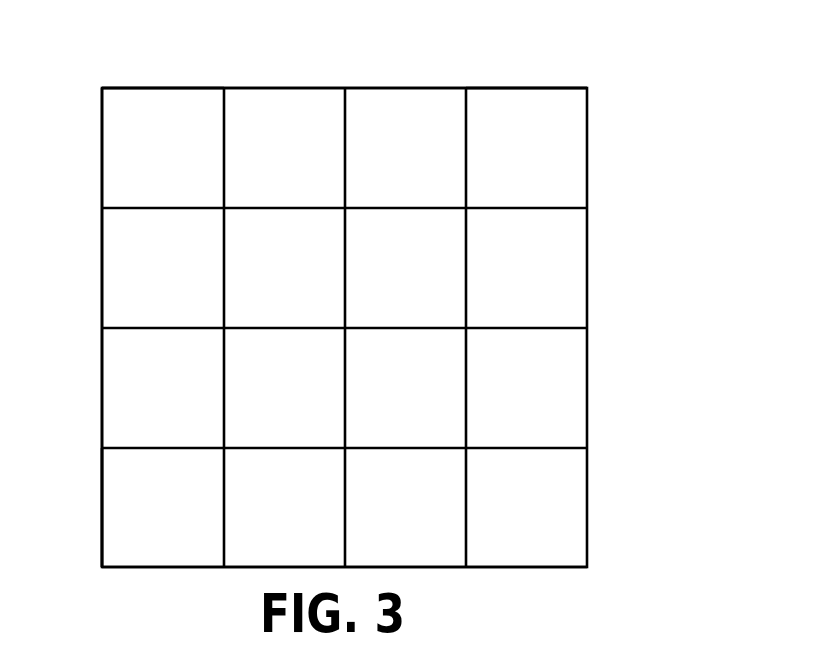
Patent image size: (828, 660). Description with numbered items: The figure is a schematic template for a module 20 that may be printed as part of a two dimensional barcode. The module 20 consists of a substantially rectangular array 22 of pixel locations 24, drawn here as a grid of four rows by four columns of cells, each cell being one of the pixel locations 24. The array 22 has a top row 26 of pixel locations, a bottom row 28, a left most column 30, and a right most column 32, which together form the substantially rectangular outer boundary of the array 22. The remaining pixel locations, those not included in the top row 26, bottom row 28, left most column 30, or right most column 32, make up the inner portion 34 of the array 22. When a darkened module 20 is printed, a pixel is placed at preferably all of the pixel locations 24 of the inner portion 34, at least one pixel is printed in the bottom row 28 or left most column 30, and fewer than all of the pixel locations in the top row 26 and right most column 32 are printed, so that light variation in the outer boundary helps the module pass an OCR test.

The module 20 is at (652, 98).
The array 22 is at (382, 88).
The pixel locations 24 is at (541, 160).
The top row 26 is at (102, 125).
The bottom row 28 is at (101, 488).
The left most column 30 is at (150, 88).
The right most column 32 is at (503, 88).
The inner portion 34 is at (445, 248).